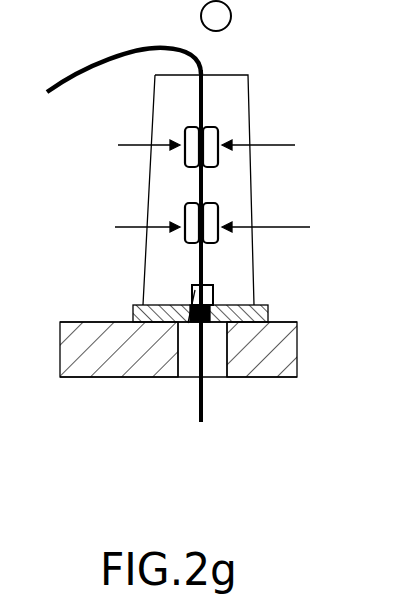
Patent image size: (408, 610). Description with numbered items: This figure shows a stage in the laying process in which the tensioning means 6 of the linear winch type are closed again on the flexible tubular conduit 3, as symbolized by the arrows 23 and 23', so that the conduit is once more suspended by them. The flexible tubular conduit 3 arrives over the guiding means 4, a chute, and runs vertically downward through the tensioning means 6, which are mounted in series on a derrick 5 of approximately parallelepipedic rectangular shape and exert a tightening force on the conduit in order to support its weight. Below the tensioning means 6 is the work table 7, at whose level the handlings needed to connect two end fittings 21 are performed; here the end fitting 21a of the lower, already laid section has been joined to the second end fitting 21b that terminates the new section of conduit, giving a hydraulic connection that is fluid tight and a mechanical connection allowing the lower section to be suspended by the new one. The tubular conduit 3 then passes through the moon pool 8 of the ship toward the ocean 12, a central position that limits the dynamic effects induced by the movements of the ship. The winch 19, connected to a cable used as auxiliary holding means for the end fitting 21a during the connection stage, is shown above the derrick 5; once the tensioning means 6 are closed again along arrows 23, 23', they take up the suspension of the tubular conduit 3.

The flexible tubular conduit 3 is at (207, 402).
The guiding means 4 is at (95, 83).
The derrick 5 is at (253, 257).
The tensioning means 6 is at (222, 127).
The work table 7 is at (143, 305).
The moon pool 8 is at (227, 348).
The ocean 12 is at (160, 422).
The winch 19 is at (219, 22).
The end fitting 21 is at (190, 298).
The end fitting 21a is at (188, 323).
The second end fitting 21b is at (212, 297).
The arrow 23 is at (158, 191).
The arrow 23' is at (266, 186).